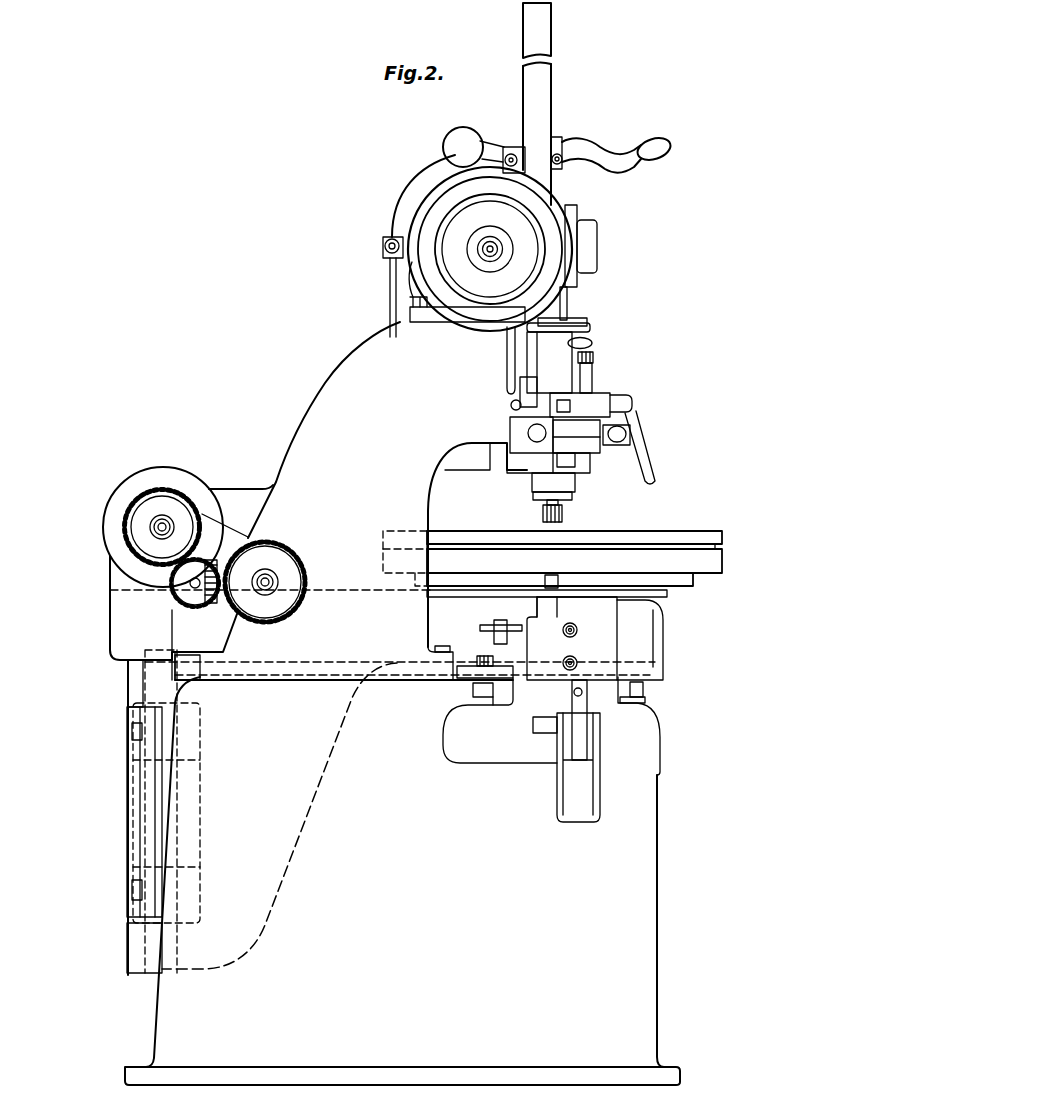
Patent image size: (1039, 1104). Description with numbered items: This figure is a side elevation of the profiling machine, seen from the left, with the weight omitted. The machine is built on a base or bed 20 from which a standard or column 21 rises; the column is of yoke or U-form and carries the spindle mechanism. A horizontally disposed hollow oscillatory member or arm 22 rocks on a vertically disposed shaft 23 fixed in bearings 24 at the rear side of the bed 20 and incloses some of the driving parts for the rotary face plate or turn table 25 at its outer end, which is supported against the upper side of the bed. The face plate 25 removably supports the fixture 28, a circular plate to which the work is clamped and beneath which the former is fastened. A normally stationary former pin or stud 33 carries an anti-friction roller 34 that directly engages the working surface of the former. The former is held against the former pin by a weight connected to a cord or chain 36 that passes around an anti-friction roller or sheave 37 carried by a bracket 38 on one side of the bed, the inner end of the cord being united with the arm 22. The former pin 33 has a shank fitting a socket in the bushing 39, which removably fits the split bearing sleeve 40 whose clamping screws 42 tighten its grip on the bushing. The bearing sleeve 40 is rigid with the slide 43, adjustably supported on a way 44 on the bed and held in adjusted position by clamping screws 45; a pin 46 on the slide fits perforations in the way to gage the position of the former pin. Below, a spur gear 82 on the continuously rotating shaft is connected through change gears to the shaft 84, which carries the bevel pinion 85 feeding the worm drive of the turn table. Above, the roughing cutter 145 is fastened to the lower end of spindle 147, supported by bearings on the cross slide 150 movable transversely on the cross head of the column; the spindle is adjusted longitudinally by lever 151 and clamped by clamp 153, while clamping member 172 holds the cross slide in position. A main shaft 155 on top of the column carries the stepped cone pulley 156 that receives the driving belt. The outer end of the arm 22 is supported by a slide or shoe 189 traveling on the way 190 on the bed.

The base or bed 20 is at (402, 881).
The standard or column 21 is at (364, 501).
The oscillatory member or arm 22 is at (328, 775).
The shaft 23 is at (180, 834).
The bearings 24 is at (195, 742).
The face plate or turn table 25 is at (673, 580).
The fixture 28 is at (712, 565).
The former pin or stud 33 is at (553, 598).
The anti-friction roller 34 is at (560, 577).
The cord or chain 36 is at (535, 708).
The anti-friction roller or sheave 37 is at (580, 748).
The bracket 38 is at (566, 767).
The bushing 39 is at (549, 606).
The bearing sleeve 40 is at (572, 648).
The clamping screws 42 is at (578, 664).
The slide 43 is at (472, 677).
The way 44 is at (477, 685).
The clamping screws 45 is at (483, 657).
The pin 46 is at (498, 622).
The spur gear 82 is at (126, 525).
The shaft 84 is at (274, 582).
The bevel pinion 85 is at (202, 572).
The roughing cutter 145 is at (564, 512).
The spindle 147 is at (563, 306).
The slide 150 is at (508, 356).
The lever 151 is at (599, 153).
The clamp 153 is at (633, 420).
The main shaft 155 is at (512, 249).
The stepped cone pulley 156 is at (442, 208).
The clamping member 172 is at (626, 404).
The slide or shoe 189 is at (645, 696).
The way 190 is at (648, 704).